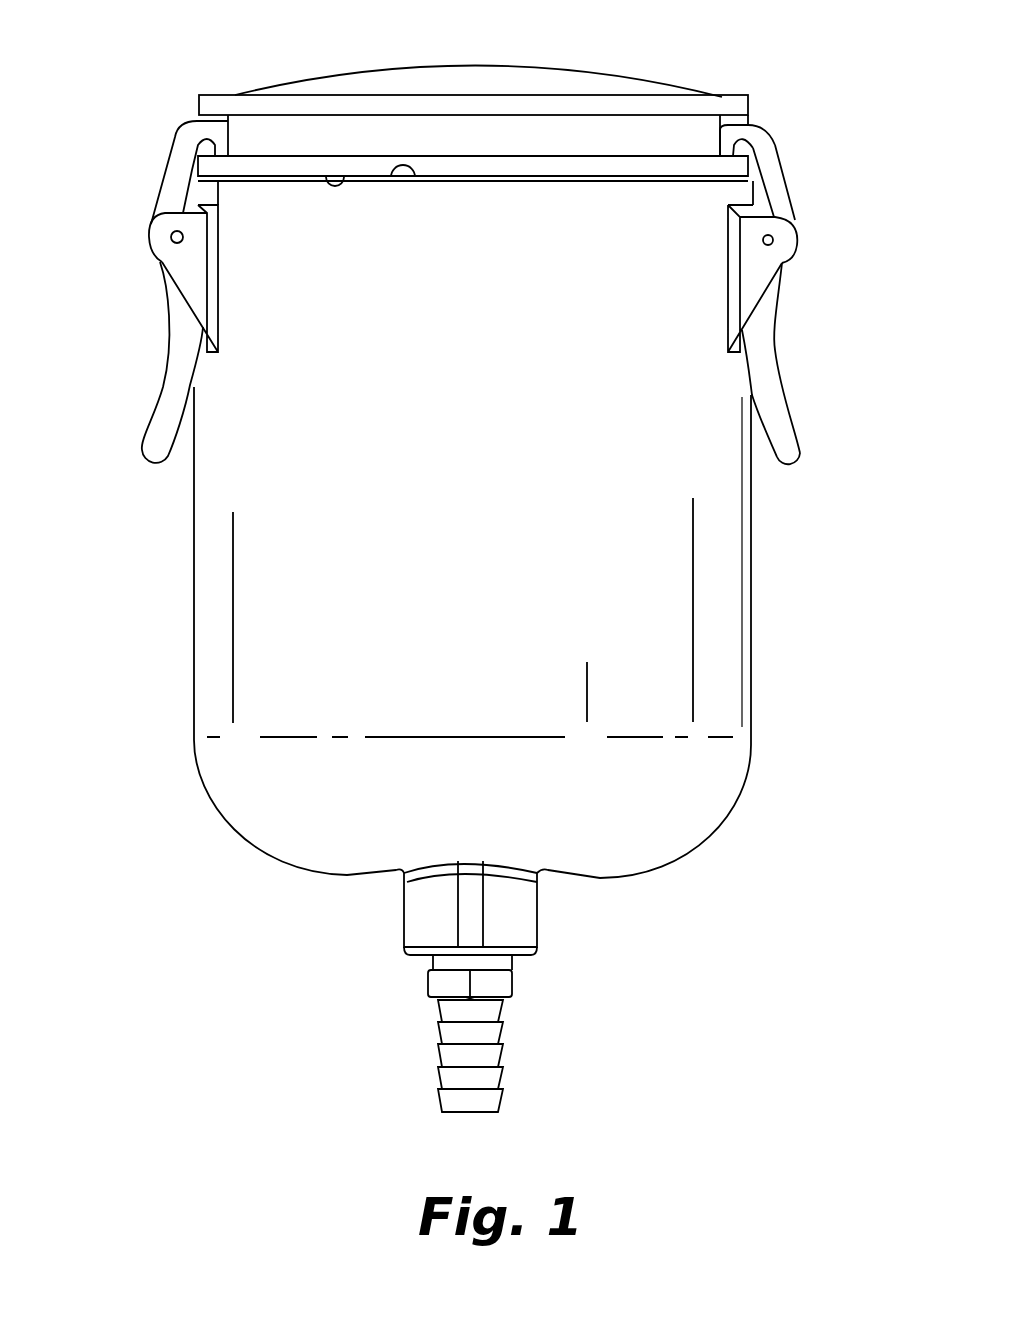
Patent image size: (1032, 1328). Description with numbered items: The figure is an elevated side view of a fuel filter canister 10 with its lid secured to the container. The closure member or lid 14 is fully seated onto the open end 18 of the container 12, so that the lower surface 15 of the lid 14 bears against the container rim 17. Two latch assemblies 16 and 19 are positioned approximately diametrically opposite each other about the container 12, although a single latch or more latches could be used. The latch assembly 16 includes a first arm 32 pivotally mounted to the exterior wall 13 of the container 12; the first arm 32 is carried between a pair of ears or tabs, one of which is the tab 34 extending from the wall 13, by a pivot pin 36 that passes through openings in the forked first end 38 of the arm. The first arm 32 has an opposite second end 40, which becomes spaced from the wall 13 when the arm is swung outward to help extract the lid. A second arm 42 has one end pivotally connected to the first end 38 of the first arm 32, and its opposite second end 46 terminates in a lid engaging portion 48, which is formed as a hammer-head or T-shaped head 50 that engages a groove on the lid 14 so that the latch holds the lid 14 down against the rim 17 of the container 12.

The fuel filter canister 10 is at (847, 253).
The container 12 is at (613, 630).
The wall 13 is at (723, 517).
The lid 14 is at (547, 82).
The lower surface 15 is at (345, 172).
The latch assembly 16 is at (800, 273).
The container rim 17 is at (415, 176).
The open end 18 is at (283, 175).
The latch assembly 19 is at (148, 283).
The first arm 32 is at (785, 443).
The tab 34 is at (757, 270).
The pivot pin 36 is at (772, 240).
The first end 38 is at (782, 293).
The second end 40 is at (783, 432).
The second arm 42 is at (768, 165).
The second end 46 is at (748, 137).
The lid engaging portion 48 is at (733, 133).
The T-shaped head 50 is at (727, 132).